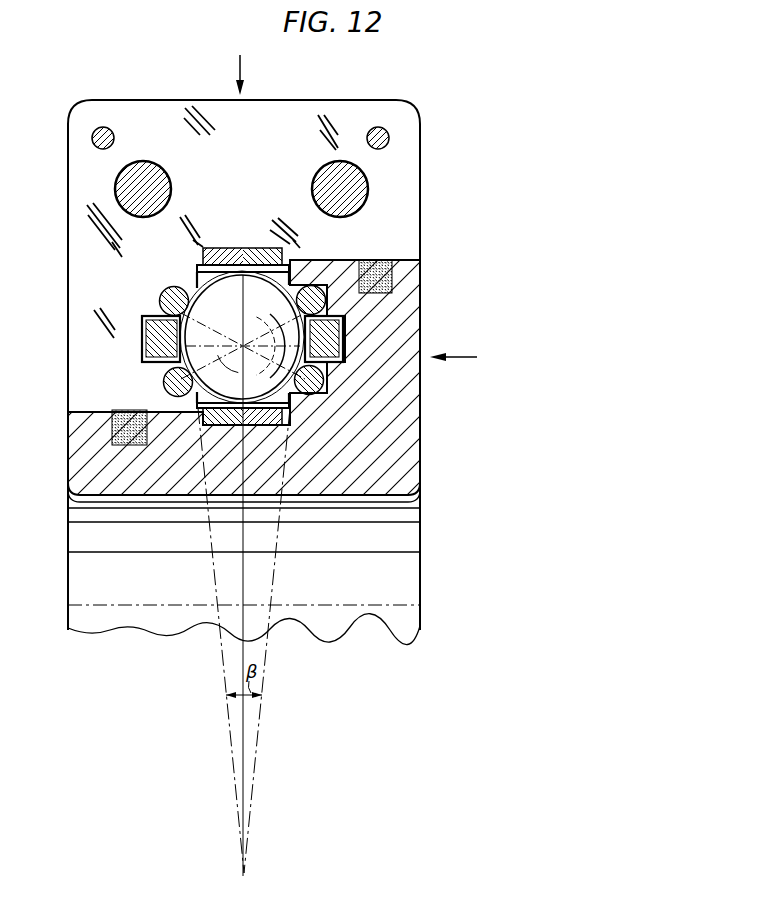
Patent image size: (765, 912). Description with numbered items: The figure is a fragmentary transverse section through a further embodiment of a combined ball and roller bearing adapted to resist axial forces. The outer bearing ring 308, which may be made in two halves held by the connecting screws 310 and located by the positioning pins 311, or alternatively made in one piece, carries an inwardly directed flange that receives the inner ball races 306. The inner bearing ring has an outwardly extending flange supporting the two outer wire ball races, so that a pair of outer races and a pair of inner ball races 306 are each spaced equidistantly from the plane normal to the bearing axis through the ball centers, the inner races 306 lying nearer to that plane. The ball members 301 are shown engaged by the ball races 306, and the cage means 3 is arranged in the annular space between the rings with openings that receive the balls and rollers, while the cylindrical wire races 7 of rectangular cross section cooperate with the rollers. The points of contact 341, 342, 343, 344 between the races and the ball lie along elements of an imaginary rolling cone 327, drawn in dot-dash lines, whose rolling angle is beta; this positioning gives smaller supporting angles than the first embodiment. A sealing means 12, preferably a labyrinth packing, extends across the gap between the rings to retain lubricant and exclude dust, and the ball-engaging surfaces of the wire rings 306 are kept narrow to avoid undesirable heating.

The outer bearing ring 308 is at (82, 179).
The connecting screws 310 is at (362, 192).
The positioning pins 311 is at (390, 136).
The sealing means 12 is at (381, 282).
The ball members 301 is at (201, 270).
The cylindrical wire races 7 is at (258, 422).
The cage means 3 is at (332, 338).
The rolling cone 327 is at (162, 311).
The inner ball races 306 is at (170, 378).
The point of contact 341 is at (213, 306).
The point of contact 342 is at (270, 306).
The point of contact 343 is at (213, 368).
The point of contact 344 is at (283, 379).